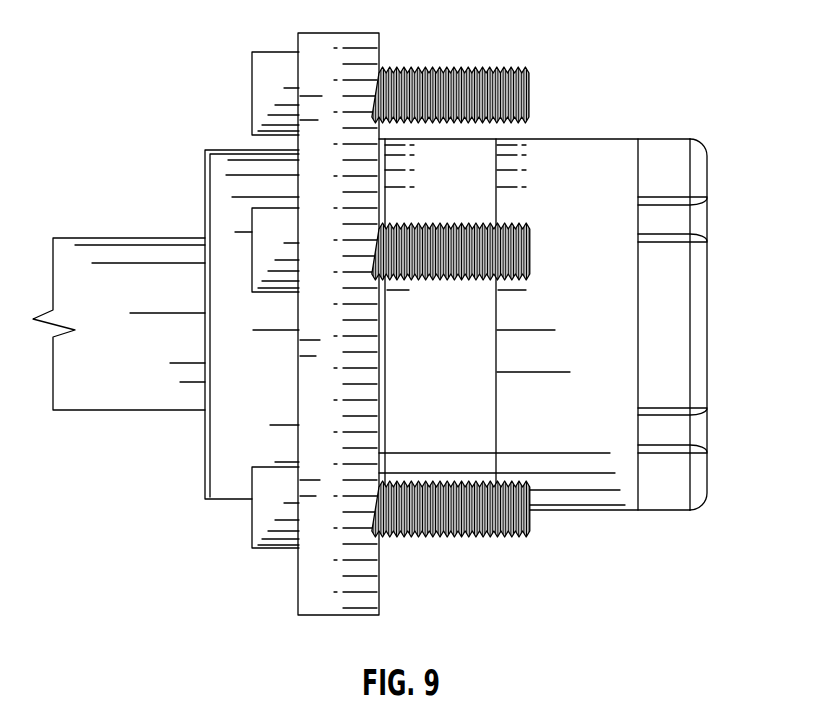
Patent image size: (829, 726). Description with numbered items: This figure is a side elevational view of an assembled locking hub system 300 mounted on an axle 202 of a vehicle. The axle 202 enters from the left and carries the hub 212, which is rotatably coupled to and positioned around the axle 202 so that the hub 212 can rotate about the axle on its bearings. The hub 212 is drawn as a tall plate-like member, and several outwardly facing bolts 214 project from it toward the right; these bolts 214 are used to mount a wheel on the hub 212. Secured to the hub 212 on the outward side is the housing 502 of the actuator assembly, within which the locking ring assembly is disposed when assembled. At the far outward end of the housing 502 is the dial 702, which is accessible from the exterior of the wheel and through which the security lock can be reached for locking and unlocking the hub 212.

The locking hub system 300 is at (187, 78).
The axle 202 is at (110, 390).
The hub 212 is at (312, 585).
The bolts 214 is at (466, 66).
The housing 502 is at (592, 148).
The dial 702 is at (667, 153).